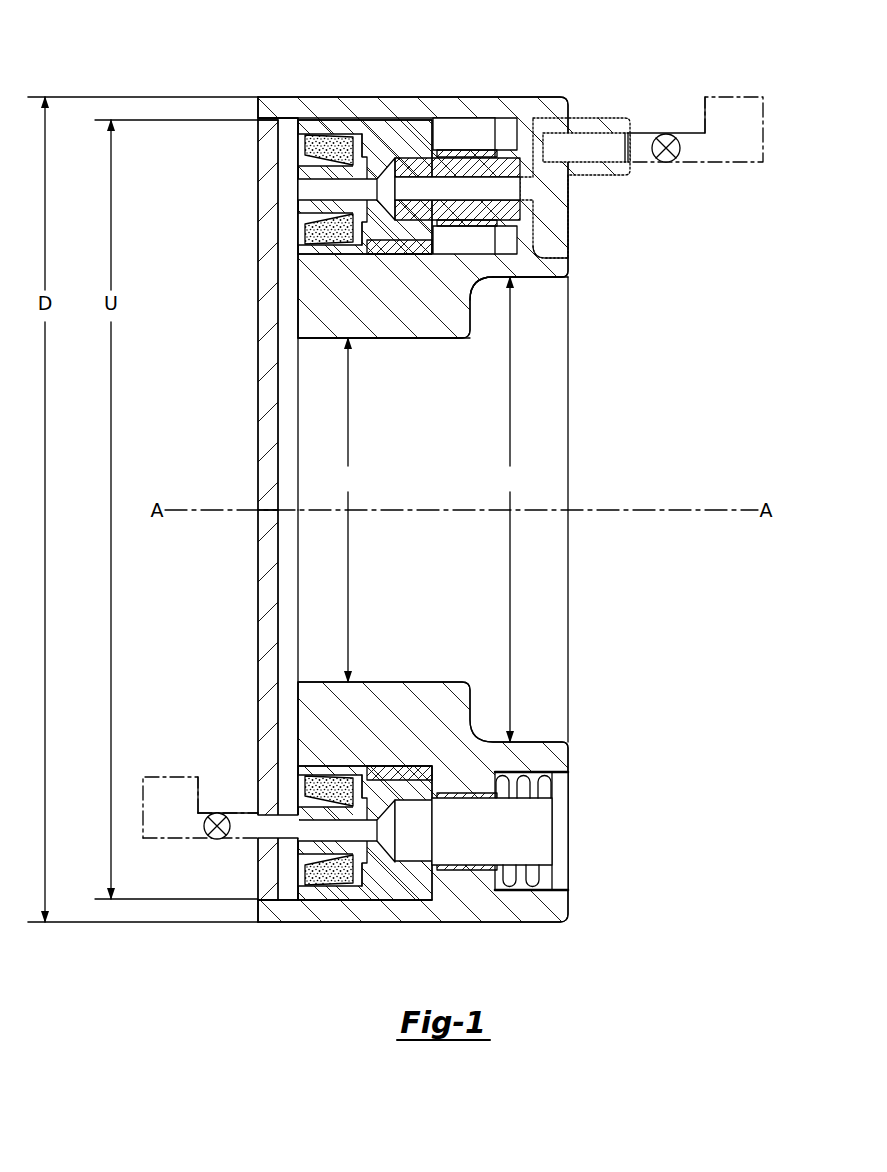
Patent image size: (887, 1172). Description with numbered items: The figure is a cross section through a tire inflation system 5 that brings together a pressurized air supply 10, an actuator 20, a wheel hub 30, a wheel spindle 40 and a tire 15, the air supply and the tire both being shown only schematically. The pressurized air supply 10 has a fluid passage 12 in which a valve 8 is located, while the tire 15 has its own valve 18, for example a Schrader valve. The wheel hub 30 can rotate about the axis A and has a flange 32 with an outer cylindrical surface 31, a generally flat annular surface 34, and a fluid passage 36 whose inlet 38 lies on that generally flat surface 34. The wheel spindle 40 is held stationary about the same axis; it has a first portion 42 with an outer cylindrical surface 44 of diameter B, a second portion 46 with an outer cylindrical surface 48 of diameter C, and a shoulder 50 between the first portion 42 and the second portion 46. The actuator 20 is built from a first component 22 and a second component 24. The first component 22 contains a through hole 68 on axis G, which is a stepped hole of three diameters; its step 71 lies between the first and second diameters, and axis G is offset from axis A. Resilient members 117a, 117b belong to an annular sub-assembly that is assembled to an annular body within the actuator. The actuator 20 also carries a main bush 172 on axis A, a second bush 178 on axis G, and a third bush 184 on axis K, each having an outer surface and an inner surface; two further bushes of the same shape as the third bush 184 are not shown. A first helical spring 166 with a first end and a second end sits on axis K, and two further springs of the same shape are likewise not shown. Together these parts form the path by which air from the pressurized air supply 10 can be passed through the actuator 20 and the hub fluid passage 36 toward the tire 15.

The tire inflation system 5 is at (330, 45).
The valve 8 is at (677, 152).
The pressurized air supply 10 is at (722, 134).
The fluid passage 12 is at (638, 147).
The tire 15 is at (157, 814).
The valve 18 is at (212, 828).
The actuator 20 is at (452, 58).
The first component 22 is at (356, 96).
The second component 24 is at (396, 118).
The wheel hub 30 is at (242, 333).
The outer cylindrical surface 31 is at (262, 112).
The flange 32 is at (276, 398).
The generally flat annular surface 34 is at (278, 594).
The fluid passage 36 is at (243, 827).
The inlet 38 is at (268, 823).
The wheel spindle 40 is at (586, 458).
The first portion 42 is at (364, 444).
The outer cylindrical surface 44 is at (417, 340).
The second portion 46 is at (530, 441).
The outer cylindrical surface 48 is at (537, 300).
The shoulder 50 is at (474, 320).
The through hole 68 is at (548, 255).
The step 71 is at (567, 116).
The resilient member 117a is at (338, 878).
The resilient member 117b is at (326, 790).
The first helical spring 166 is at (540, 882).
The main bush 172 is at (403, 256).
The second bush 178 is at (462, 157).
The third bush 184 is at (450, 868).